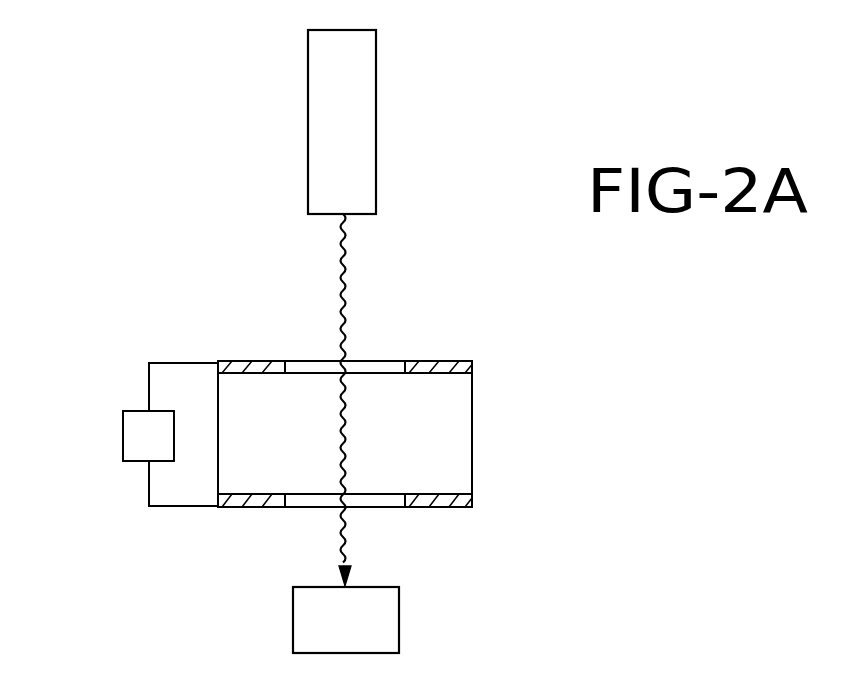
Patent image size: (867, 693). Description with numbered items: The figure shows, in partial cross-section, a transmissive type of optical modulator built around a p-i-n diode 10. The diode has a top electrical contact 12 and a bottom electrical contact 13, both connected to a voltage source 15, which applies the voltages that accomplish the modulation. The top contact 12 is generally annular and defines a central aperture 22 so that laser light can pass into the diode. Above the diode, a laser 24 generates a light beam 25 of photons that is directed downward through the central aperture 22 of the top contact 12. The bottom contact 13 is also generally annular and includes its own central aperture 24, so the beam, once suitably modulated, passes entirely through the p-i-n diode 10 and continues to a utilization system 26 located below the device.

The p-i-n diode 10 is at (108, 301).
The top electrical contact 12 is at (437, 361).
The bottom electrical contact 13 is at (463, 507).
The voltage source 15 is at (123, 435).
The central aperture 22 is at (372, 366).
The laser 24 is at (376, 117).
The light beam 25 is at (343, 291).
The utilization system 26 is at (293, 614).